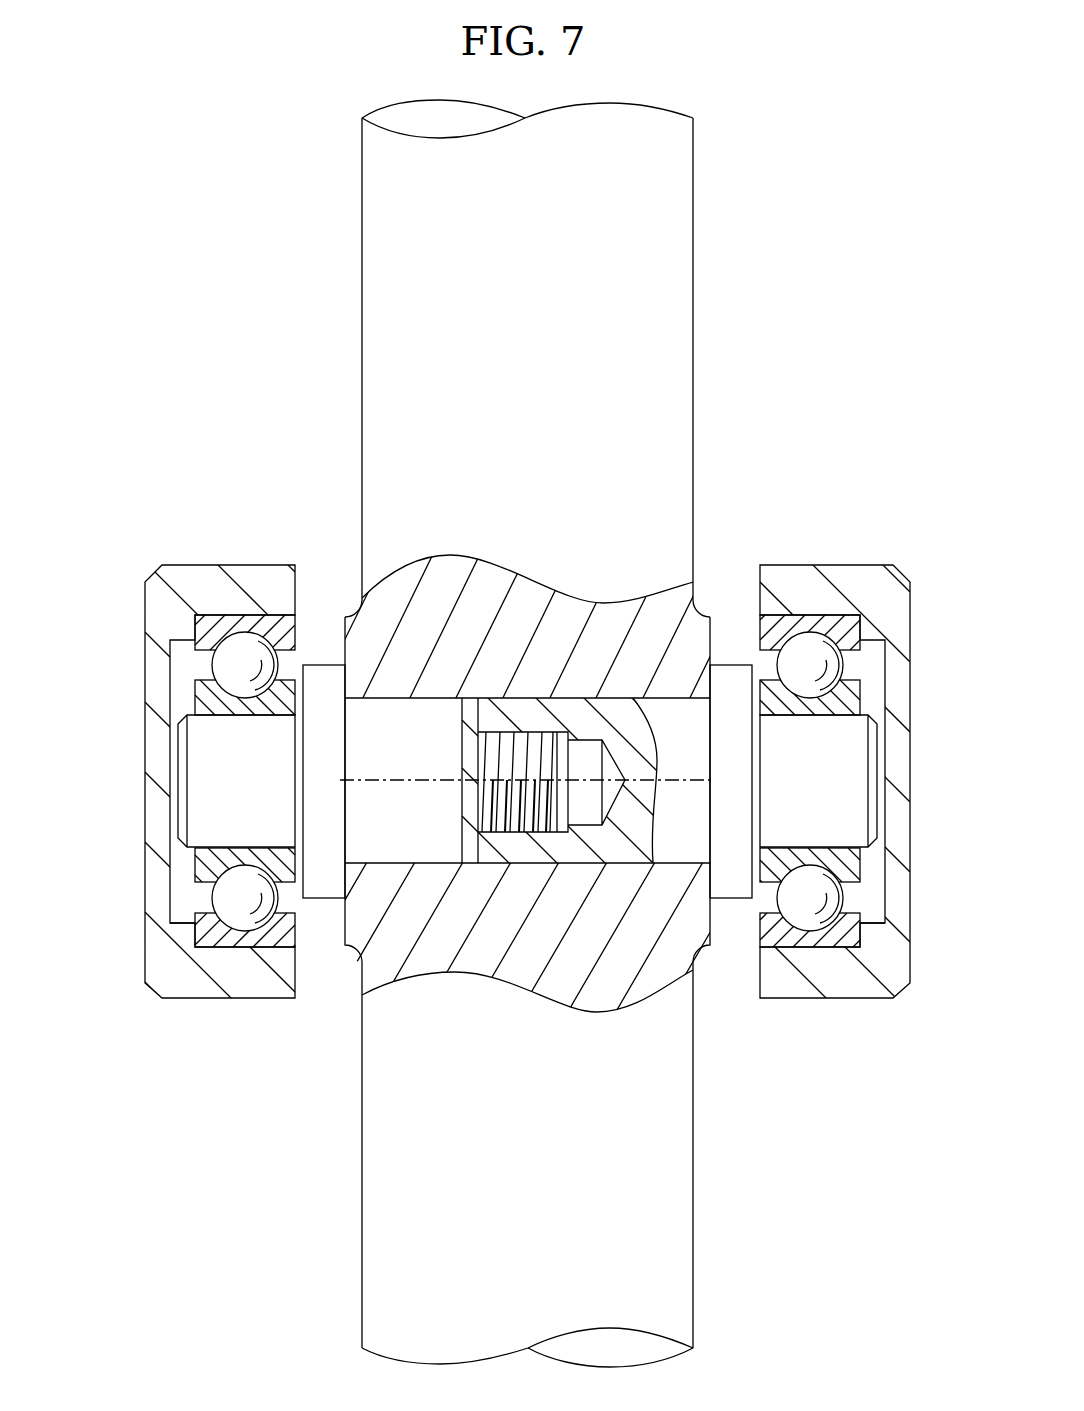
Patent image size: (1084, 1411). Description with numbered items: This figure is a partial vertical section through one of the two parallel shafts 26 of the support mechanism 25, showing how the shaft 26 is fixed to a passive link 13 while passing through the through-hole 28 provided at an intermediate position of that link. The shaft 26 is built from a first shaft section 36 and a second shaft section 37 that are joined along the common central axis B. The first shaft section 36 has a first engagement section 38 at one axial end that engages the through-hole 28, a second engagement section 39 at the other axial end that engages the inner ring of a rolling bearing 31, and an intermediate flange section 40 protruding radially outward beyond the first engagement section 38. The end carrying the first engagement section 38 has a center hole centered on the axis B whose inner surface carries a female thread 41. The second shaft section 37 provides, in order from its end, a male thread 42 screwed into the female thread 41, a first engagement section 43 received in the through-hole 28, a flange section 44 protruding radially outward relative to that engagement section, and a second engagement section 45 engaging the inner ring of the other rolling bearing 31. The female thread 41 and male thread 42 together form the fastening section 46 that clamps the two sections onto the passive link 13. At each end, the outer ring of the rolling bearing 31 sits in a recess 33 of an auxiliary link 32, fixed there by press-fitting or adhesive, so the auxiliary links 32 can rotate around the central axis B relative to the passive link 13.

The passive link 13 is at (362, 223).
The support mechanism 25 is at (105, 572).
The shaft 26 is at (728, 630).
The through-hole 28 is at (437, 863).
The rolling bearing 31 is at (233, 950).
The auxiliary link 32 is at (208, 563).
The recess 33 is at (188, 922).
The first shaft section 36 is at (882, 758).
The second shaft section 37 is at (175, 809).
The first engagement section 38 is at (558, 698).
The second engagement section 39 is at (848, 806).
The flange section 40 is at (731, 900).
The female thread 41 is at (570, 815).
The male thread 42 is at (523, 865).
The first engagement section 43 is at (420, 698).
The flange section 44 is at (320, 900).
The second engagement section 45 is at (212, 755).
The fastening section 46 is at (559, 820).
The central axis B is at (378, 780).